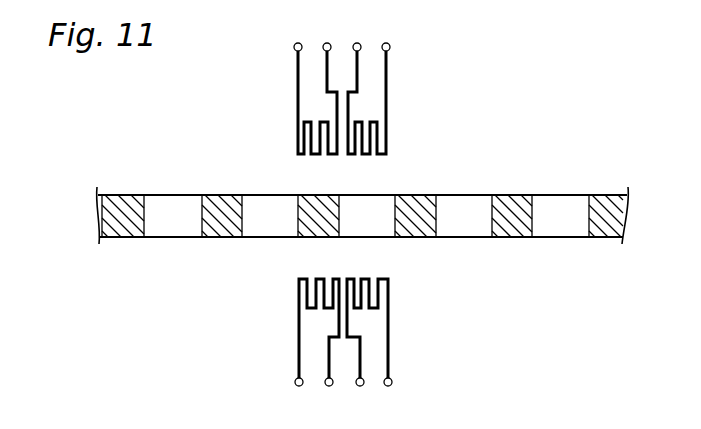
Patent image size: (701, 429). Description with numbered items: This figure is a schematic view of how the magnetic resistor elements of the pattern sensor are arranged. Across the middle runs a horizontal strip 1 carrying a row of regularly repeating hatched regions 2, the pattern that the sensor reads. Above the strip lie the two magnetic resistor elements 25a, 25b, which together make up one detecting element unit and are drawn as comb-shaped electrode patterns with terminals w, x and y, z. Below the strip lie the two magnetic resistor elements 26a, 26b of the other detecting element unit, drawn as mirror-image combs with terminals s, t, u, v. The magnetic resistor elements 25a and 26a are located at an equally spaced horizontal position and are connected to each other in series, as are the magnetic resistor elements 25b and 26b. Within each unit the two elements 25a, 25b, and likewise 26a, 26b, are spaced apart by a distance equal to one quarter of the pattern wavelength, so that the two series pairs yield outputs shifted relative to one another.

The substrate 1 is at (459, 238).
The hatched electrode regions 2 is at (512, 194).
The magnetic resistor element 25a is at (297, 126).
The magnetic resistor element 25b is at (388, 126).
The magnetic resistor element 26a is at (298, 302).
The magnetic resistor element 26b is at (390, 297).